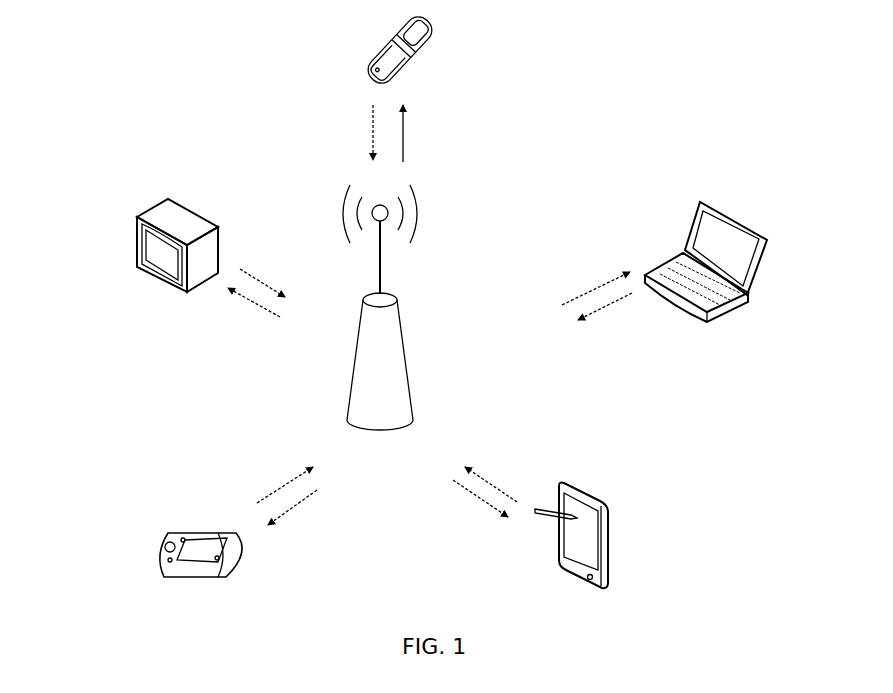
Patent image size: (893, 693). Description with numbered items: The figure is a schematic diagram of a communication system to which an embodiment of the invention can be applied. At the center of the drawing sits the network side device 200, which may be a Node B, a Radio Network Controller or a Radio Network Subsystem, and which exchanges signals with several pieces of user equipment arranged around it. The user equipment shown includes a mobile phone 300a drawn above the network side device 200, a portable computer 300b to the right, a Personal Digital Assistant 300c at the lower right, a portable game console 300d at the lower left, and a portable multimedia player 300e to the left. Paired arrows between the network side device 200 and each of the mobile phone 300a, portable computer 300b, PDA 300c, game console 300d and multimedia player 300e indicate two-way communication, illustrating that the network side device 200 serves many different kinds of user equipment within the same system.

The network side device 200 is at (378, 310).
The mobile phone 300a is at (410, 50).
The portable computer 300b is at (713, 223).
The Personal Digital Assistant (PDA) 300c is at (572, 533).
The portable game console 300d is at (202, 550).
The portable multimedia player 300e is at (165, 213).